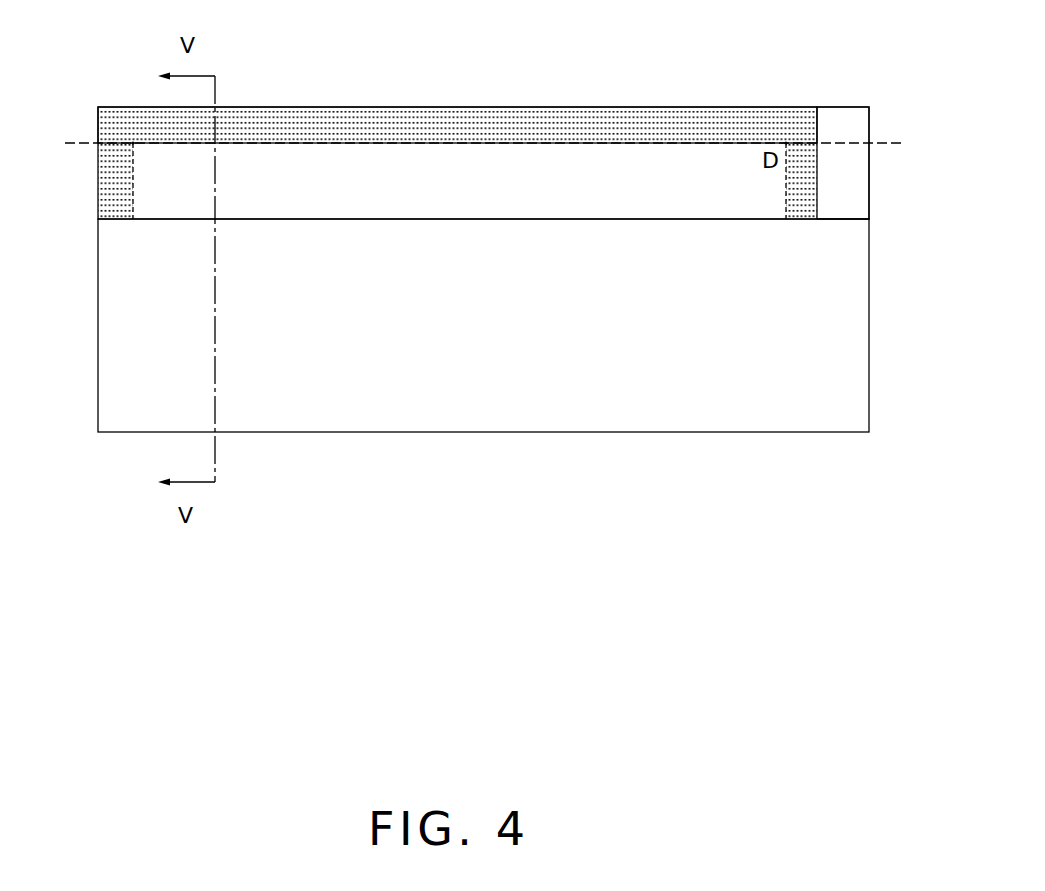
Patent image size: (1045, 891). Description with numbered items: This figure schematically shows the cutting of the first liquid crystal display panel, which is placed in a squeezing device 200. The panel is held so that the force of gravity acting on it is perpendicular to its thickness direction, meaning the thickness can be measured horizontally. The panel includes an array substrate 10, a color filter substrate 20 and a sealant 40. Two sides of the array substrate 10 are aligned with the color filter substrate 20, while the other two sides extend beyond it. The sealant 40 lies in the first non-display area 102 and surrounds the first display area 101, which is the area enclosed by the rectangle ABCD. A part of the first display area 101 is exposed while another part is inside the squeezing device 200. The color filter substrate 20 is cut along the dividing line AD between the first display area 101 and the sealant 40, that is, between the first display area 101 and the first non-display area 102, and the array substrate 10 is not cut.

The array substrate 10 is at (869, 125).
The color filter substrate 20 is at (817, 132).
The sealant 40 is at (115, 128).
The first display area 101 is at (162, 185).
The first non-display area 102 is at (143, 123).
The squeezing device 200 is at (115, 332).